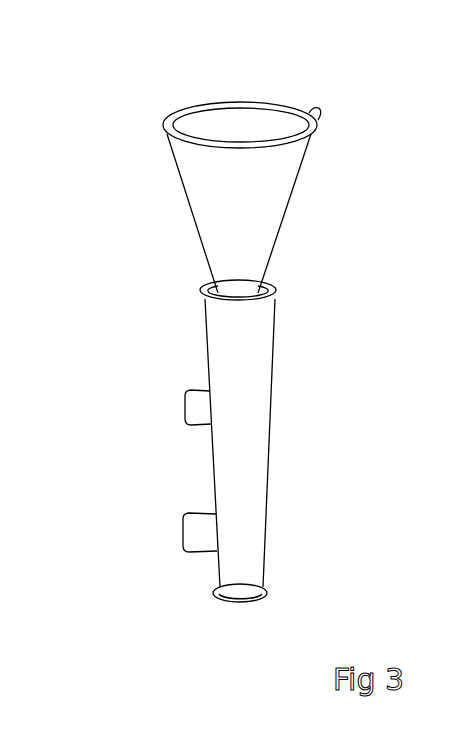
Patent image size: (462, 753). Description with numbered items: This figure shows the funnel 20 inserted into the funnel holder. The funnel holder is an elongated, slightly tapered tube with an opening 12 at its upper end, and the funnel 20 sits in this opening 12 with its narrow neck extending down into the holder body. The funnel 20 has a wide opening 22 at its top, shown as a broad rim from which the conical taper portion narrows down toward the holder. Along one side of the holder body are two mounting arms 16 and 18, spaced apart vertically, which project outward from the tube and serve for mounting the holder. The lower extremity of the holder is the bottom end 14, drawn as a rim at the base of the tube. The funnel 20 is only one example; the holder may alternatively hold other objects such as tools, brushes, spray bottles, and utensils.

The opening 12 is at (293, 302).
The bottom end 14 is at (223, 610).
The mounting arm 16 is at (167, 408).
The mounting arm 18 is at (172, 537).
The funnel 20 is at (295, 227).
The wide opening 22 is at (260, 133).